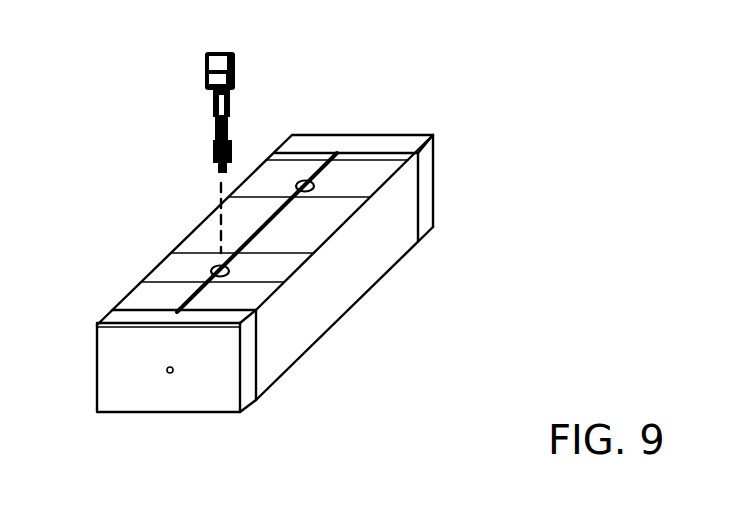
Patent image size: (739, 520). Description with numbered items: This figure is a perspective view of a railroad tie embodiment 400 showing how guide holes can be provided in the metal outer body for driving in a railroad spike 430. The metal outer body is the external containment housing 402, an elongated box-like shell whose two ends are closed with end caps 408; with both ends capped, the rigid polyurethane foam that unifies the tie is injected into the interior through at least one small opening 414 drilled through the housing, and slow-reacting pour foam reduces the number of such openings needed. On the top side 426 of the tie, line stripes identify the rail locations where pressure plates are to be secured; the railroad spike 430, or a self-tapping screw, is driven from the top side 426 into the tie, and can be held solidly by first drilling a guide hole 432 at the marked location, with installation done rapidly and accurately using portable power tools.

The embodiment 400 is at (617, 156).
The external containment housing 402 is at (288, 333).
The end caps 408 is at (117, 400).
The small opening 414 is at (172, 376).
The top side 426 is at (188, 253).
The railroad spike 430 is at (205, 65).
The openings / holes 432 is at (229, 268).